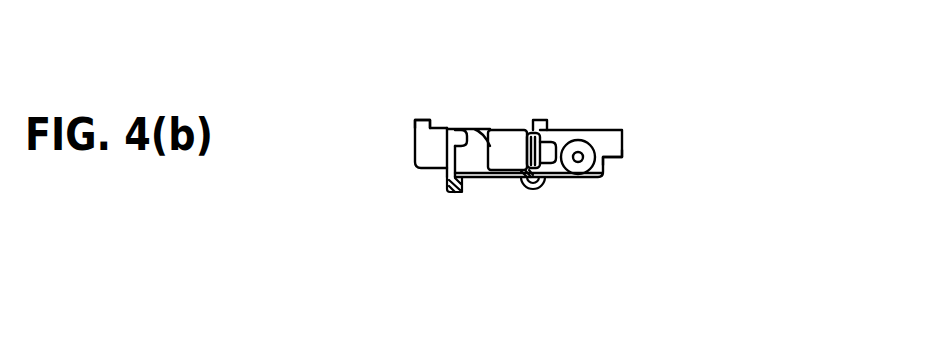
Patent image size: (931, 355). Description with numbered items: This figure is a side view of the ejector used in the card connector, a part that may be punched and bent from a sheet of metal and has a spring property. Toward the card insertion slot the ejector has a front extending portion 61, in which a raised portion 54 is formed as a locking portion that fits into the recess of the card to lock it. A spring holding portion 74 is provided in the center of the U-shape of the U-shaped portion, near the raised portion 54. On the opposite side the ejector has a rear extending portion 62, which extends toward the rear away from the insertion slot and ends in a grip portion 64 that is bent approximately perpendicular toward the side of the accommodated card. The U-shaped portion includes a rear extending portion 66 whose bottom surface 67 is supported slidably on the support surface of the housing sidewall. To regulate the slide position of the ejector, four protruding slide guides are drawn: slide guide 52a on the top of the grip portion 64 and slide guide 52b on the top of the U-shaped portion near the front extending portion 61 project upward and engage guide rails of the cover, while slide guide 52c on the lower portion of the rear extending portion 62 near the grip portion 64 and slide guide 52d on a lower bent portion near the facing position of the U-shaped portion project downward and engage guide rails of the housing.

The slide guide 52a is at (423, 121).
The slide guide 52b is at (535, 120).
The slide guide 52c is at (455, 187).
The slide guide 52d is at (535, 185).
The raised portion 54 is at (472, 128).
The front extending portion 61 is at (510, 150).
The rear extending portion 62 is at (432, 177).
The grip portion 64 is at (427, 148).
The rear extending portion of the U-shaped portion 66 is at (613, 140).
The bottom surface 67 is at (614, 157).
The spring holding portion 74 is at (576, 168).